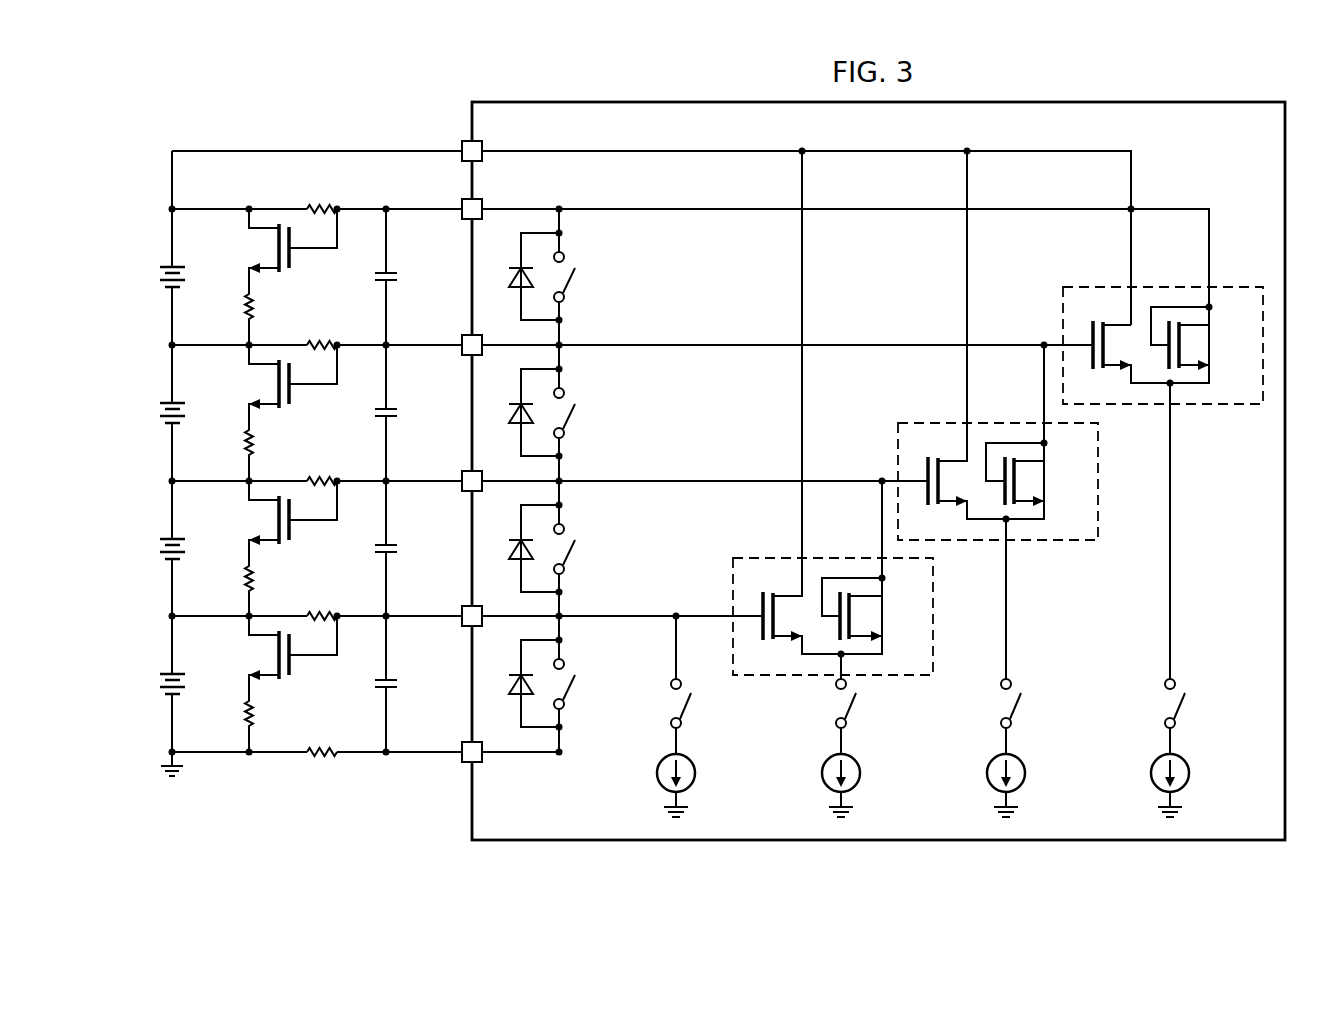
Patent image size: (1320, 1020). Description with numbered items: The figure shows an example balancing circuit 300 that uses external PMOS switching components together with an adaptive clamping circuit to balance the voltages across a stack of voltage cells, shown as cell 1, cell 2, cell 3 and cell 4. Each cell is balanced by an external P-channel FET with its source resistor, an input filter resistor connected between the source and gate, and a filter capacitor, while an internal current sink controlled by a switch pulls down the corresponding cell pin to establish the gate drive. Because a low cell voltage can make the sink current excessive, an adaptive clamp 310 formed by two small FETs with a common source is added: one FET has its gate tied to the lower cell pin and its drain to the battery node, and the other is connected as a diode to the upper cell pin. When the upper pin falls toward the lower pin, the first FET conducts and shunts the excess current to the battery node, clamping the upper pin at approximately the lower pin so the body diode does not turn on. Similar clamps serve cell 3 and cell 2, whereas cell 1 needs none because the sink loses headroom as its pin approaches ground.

The balancing circuit 300 is at (374, 94).
The adaptive clamp 310 is at (765, 559).
The cell 1 is at (141, 684).
The cell 2 is at (141, 549).
The cell 3 is at (141, 413).
The cell 4 is at (141, 277).